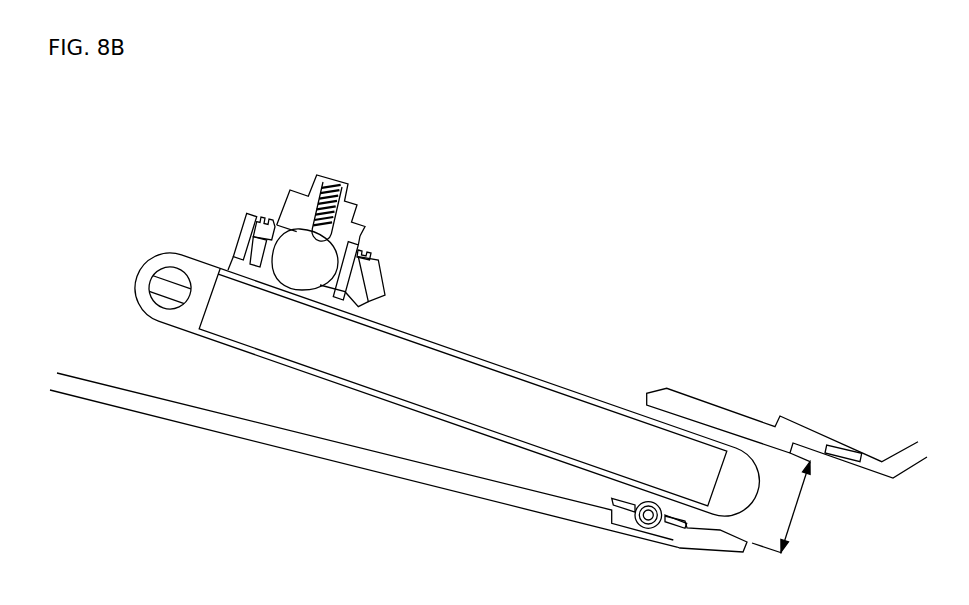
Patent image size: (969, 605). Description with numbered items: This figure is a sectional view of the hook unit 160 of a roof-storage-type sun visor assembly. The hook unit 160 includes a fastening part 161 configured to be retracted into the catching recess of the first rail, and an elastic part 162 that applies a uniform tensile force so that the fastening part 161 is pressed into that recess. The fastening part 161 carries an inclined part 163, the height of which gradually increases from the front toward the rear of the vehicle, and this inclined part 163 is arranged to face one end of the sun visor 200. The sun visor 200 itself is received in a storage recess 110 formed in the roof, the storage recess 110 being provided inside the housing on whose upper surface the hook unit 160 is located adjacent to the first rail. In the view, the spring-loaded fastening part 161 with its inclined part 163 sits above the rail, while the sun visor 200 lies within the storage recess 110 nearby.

The hook unit 160 is at (328, 173).
The fastening part 161 is at (320, 270).
The elastic part 162 is at (345, 182).
The inclined part 163 is at (366, 307).
The sun visor 200 is at (685, 442).
The storage recess 110 is at (796, 503).